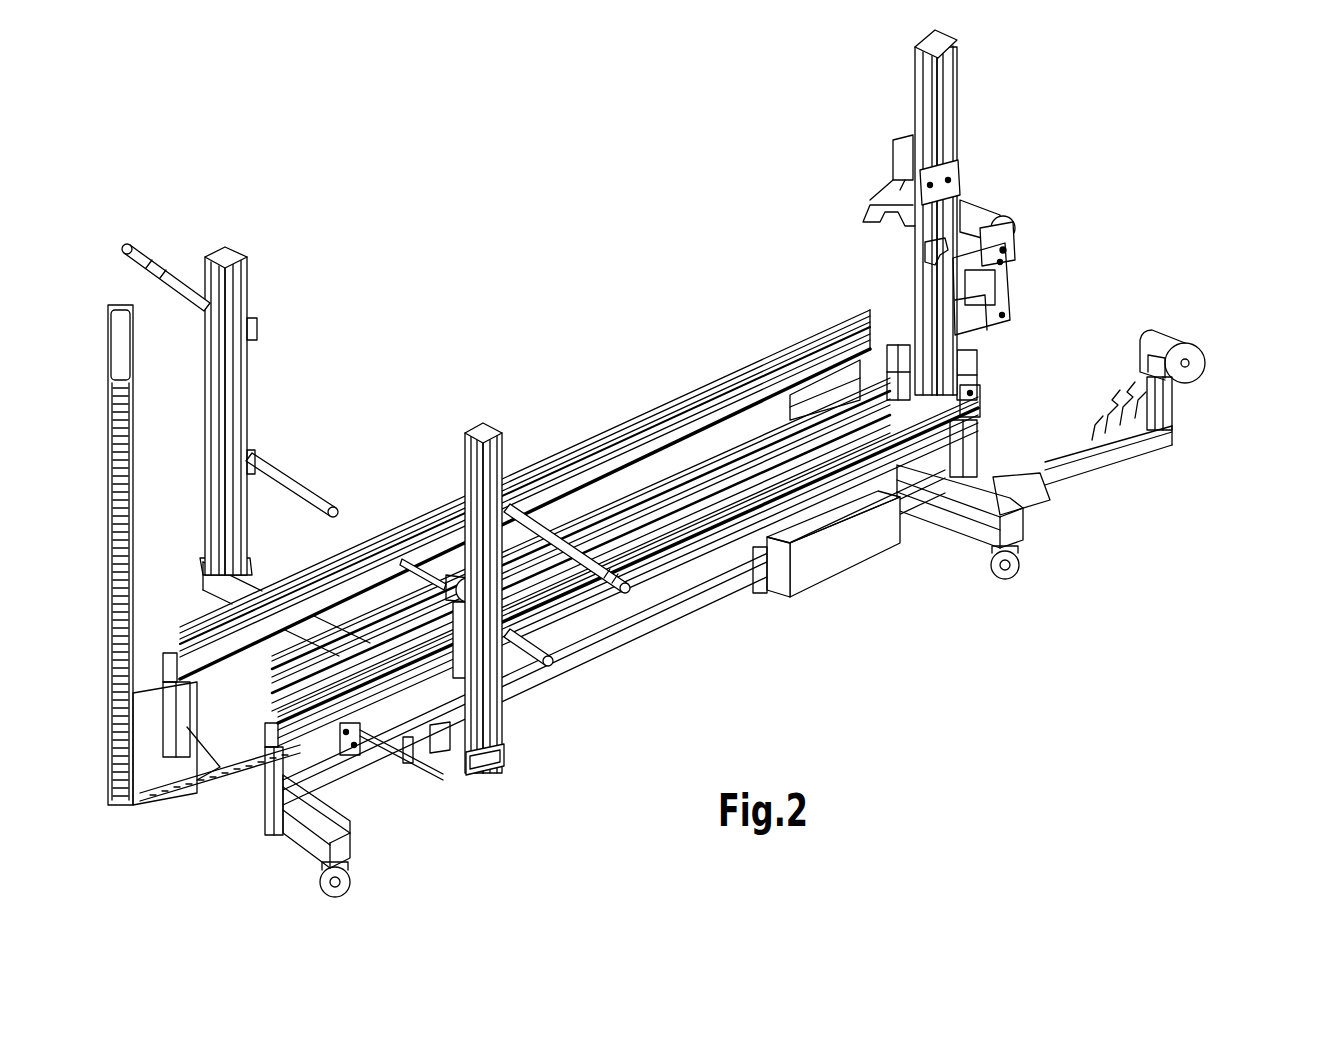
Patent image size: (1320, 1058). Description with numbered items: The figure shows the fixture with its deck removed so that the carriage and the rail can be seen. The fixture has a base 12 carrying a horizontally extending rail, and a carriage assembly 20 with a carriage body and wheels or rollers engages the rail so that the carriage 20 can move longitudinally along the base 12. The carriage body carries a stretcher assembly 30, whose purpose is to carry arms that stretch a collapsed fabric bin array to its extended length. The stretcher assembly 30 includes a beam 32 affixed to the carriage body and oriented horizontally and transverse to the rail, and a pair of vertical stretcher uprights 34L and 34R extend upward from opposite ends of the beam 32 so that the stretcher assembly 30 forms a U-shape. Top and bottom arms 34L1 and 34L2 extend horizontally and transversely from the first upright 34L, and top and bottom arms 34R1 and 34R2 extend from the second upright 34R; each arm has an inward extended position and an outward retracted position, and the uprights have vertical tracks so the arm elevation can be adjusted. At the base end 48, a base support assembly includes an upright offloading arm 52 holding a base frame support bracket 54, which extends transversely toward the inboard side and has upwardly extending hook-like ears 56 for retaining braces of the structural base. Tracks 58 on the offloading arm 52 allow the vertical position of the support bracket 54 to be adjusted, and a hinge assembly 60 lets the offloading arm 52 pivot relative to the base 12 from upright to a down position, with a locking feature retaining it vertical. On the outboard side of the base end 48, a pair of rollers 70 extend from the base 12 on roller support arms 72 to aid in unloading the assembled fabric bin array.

The base 12 is at (960, 510).
The carriage assembly 20 is at (360, 740).
The stretcher assembly 30 is at (473, 782).
The beam 32 is at (457, 760).
The vertical stretcher upright 34L is at (500, 708).
The left lower handle bar 34L1 is at (533, 648).
The left upper handle bar 34L2 is at (550, 537).
The vertical stretcher upright 34R is at (243, 285).
The right lower handle bar 34R1 is at (300, 490).
The right upper handle bar 34R2 is at (166, 268).
The base end 48 is at (1038, 300).
The offloading arm 52 is at (925, 211).
The base frame support bracket 54 is at (958, 246).
The hook-like ears 56 is at (863, 213).
The tracks 58 is at (950, 66).
The hinge assembly 60 is at (978, 388).
The rollers 70 is at (1000, 222).
The roller support arms 72 is at (1007, 290).